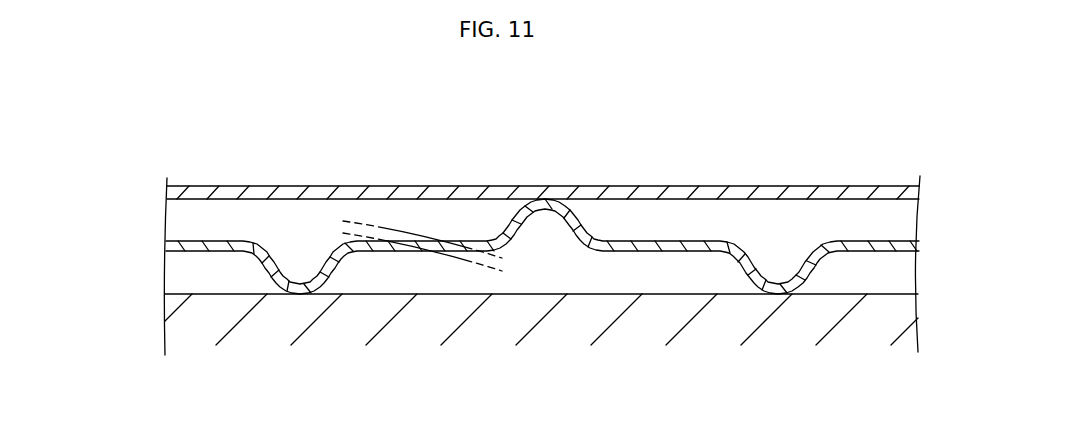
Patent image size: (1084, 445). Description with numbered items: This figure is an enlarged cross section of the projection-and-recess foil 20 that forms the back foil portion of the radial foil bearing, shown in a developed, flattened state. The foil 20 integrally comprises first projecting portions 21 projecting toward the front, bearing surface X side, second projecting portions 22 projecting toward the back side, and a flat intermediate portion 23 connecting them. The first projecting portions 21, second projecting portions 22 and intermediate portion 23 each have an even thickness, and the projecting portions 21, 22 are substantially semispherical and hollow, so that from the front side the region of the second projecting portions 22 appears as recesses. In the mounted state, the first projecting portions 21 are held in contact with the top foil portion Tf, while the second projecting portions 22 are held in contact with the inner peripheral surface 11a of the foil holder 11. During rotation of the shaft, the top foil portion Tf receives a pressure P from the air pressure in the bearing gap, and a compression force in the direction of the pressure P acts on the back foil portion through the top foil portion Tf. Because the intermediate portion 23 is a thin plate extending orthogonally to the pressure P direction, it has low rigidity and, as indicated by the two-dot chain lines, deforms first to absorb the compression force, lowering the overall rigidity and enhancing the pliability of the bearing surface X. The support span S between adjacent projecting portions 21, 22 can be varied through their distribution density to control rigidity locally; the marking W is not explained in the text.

The foil holder 11 is at (783, 327).
The inner peripheral surface 11a is at (212, 294).
The projection-and-recess foil 20 is at (205, 240).
The first projecting portions 21 is at (489, 200).
The second projecting portions 22 is at (266, 275).
The intermediate portion 23 is at (388, 253).
The top foil portion Tf is at (325, 185).
The workpiece W is at (390, 138).
The bearing surface X is at (436, 185).
The pressure P is at (242, 185).
The support span S is at (542, 178).